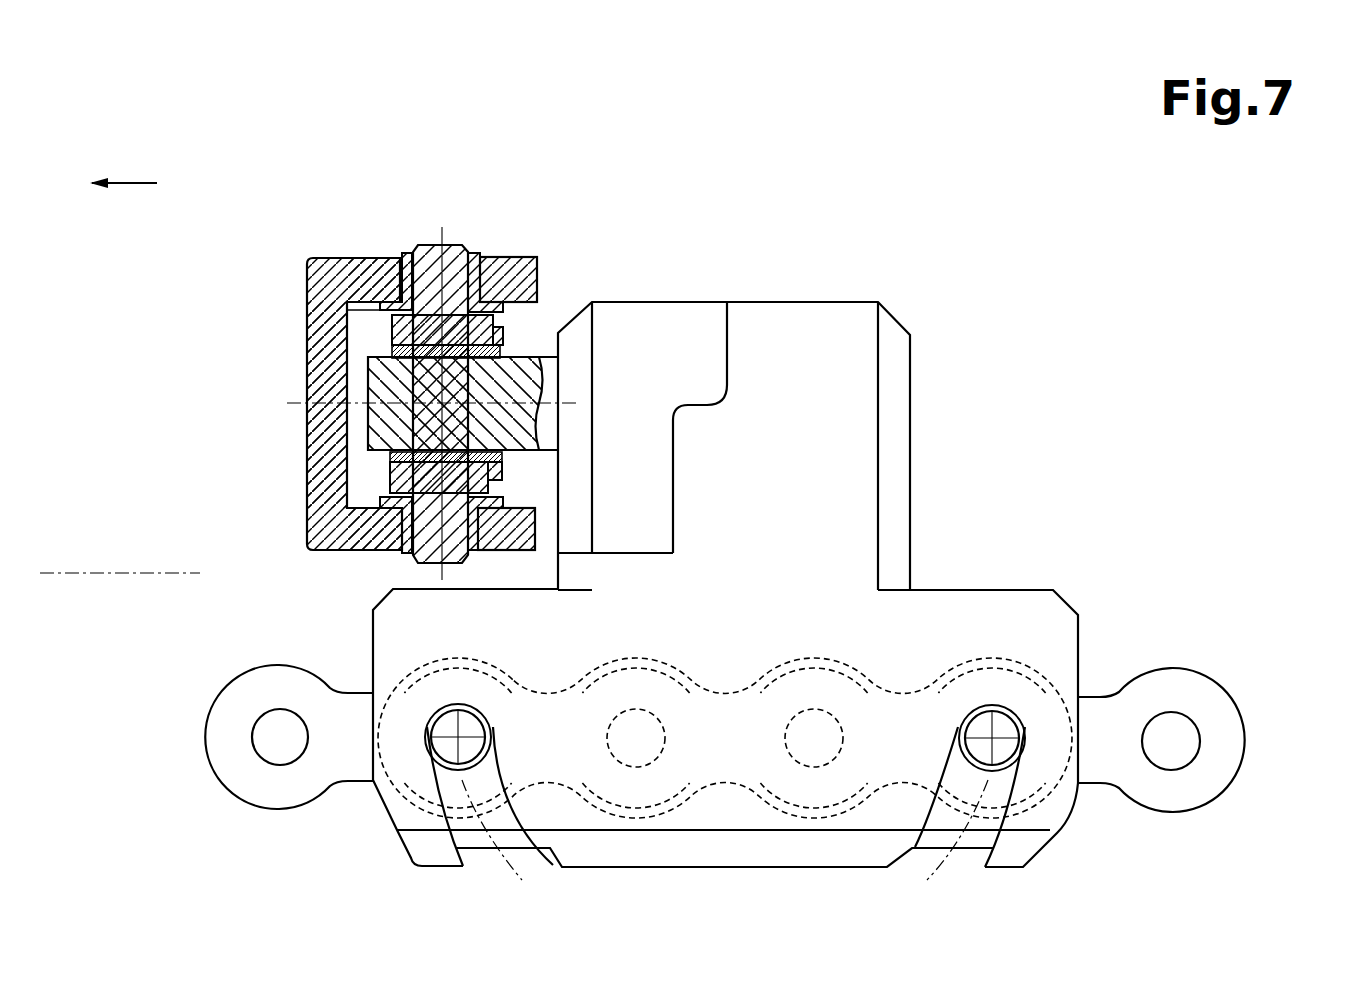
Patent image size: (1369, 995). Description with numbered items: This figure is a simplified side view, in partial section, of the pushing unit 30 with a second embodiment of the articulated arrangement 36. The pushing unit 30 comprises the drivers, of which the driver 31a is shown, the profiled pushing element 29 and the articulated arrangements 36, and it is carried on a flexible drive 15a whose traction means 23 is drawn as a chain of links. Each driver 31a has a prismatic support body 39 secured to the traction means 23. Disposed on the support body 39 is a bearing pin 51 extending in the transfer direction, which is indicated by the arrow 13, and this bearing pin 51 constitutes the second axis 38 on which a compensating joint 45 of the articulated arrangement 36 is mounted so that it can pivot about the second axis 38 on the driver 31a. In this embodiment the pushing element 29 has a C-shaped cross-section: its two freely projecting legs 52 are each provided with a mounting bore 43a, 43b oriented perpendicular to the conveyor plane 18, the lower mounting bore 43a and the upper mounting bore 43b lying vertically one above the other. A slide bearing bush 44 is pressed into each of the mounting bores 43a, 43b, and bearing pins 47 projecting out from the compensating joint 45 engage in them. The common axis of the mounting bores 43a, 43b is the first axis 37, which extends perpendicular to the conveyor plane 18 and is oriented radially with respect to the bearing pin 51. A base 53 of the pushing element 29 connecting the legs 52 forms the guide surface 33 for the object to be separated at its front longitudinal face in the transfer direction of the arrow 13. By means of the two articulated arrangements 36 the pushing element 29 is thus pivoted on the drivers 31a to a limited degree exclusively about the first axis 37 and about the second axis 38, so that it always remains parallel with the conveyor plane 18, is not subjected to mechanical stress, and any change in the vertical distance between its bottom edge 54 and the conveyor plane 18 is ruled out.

The arrow 13 is at (135, 180).
The flexible drive 15a is at (1252, 686).
The conveyor plane 18 is at (83, 569).
The traction means 23 is at (1172, 667).
The pushing element 29 is at (347, 257).
The pushing unit 30 is at (862, 146).
The driver 31a is at (912, 387).
The guide surface 33 is at (303, 342).
The articulated arrangement 36 is at (575, 246).
The first axis 37 is at (445, 233).
The second axis 38 is at (296, 403).
The support body 39 is at (897, 523).
The mounting bore 43a is at (382, 527).
The mounting bore 43b is at (395, 273).
The slide bearing bush 44 is at (380, 308).
The compensating joint 45 is at (378, 477).
The bearing pin 47 is at (428, 267).
The bearing pin 51 is at (510, 377).
The leg 52 is at (513, 265).
The base 53 is at (317, 445).
The bottom edge 54 is at (343, 548).